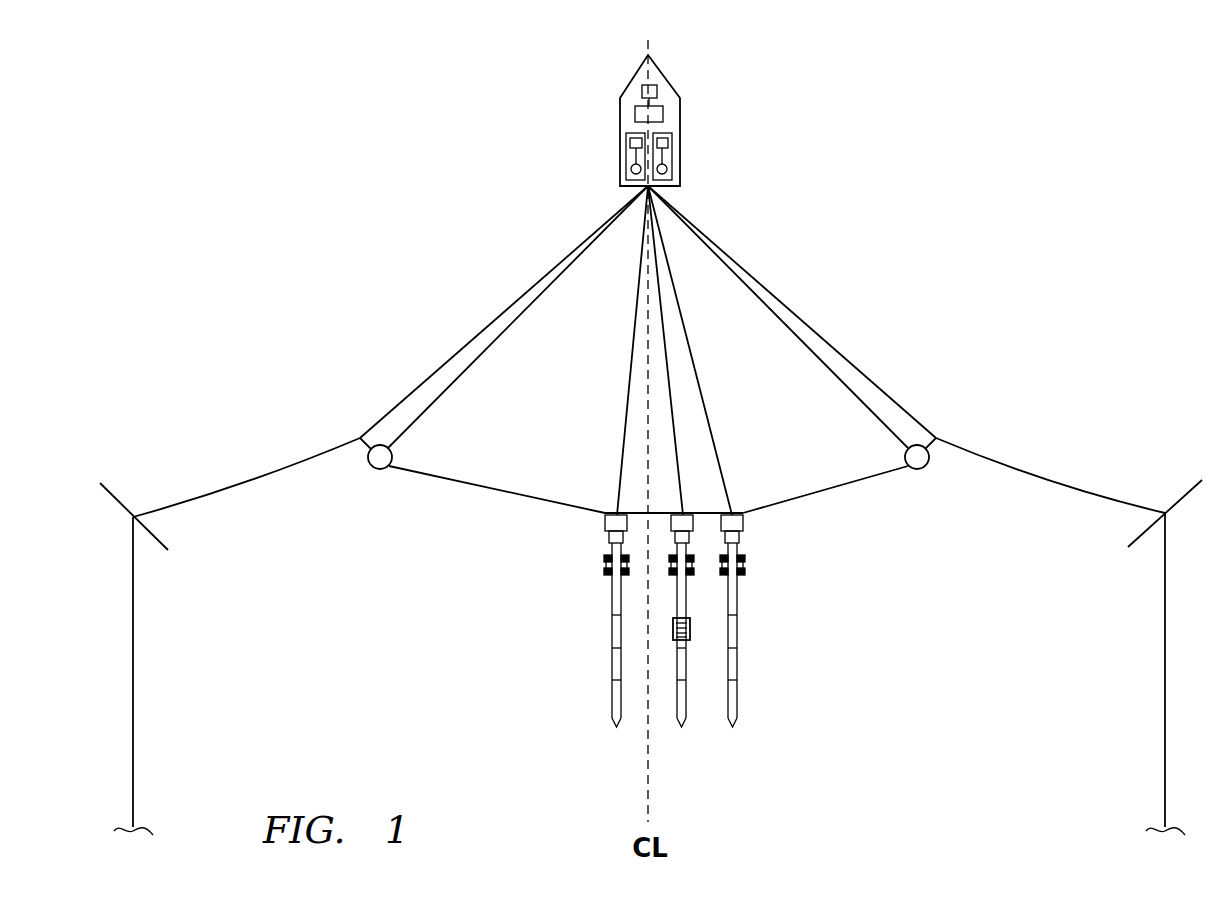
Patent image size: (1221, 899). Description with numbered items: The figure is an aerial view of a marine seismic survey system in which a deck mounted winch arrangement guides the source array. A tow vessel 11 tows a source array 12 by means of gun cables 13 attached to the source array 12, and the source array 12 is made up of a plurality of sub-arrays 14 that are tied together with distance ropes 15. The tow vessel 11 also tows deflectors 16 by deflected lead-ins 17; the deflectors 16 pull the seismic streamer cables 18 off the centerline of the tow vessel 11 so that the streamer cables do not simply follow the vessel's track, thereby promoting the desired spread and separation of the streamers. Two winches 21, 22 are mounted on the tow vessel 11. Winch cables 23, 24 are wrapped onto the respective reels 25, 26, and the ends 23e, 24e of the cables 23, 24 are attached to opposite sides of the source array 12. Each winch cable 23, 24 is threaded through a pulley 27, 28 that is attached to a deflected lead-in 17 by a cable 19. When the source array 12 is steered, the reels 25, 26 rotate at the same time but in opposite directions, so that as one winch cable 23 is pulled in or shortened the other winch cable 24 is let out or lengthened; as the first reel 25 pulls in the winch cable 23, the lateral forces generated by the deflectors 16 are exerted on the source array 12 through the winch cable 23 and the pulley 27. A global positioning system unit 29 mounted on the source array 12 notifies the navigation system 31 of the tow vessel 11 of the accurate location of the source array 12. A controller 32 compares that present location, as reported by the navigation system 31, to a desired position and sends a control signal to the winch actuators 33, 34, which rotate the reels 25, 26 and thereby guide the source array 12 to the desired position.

The tow vessel 11 is at (635, 78).
The source array 12 is at (631, 773).
The gun cables 13 is at (628, 378).
The sub-arrays 14 is at (617, 727).
The distance ropes 15 is at (702, 515).
The deflectors 16 is at (111, 491).
The deflected lead-ins 17 is at (262, 470).
The seismic streamer cables 18 is at (133, 718).
The cable 19 is at (365, 445).
The winch 21 is at (627, 158).
The winch 22 is at (672, 158).
The winch cable 23 is at (520, 297).
The end of winch cable 23e is at (608, 512).
The winch cable 24 is at (776, 297).
The end of winch cable 24e is at (740, 512).
The reel 25 is at (631, 172).
The reel 26 is at (667, 172).
The pulley 27 is at (392, 450).
The pulley 28 is at (905, 450).
The global positioning system (GPS) unit 29 is at (691, 628).
The navigation system 31 is at (657, 92).
The controller 32 is at (664, 113).
The winch actuator 33 is at (630, 140).
The winch actuator 34 is at (668, 140).